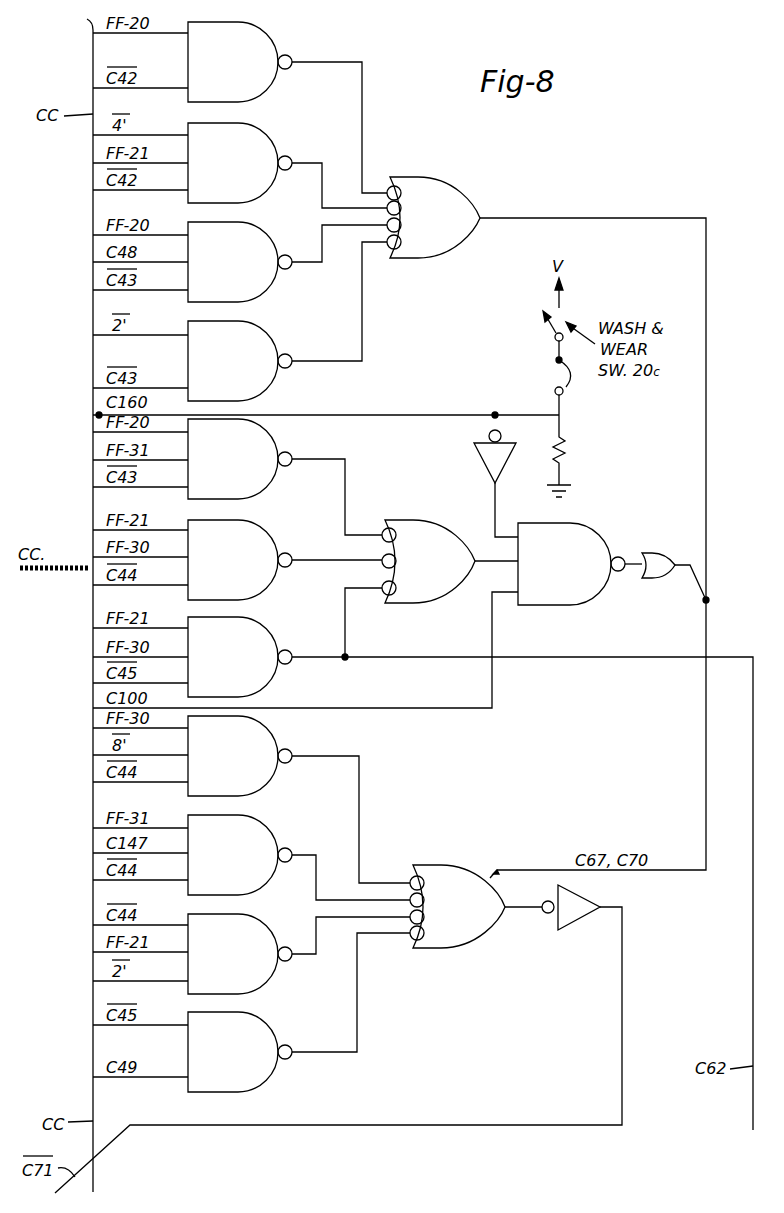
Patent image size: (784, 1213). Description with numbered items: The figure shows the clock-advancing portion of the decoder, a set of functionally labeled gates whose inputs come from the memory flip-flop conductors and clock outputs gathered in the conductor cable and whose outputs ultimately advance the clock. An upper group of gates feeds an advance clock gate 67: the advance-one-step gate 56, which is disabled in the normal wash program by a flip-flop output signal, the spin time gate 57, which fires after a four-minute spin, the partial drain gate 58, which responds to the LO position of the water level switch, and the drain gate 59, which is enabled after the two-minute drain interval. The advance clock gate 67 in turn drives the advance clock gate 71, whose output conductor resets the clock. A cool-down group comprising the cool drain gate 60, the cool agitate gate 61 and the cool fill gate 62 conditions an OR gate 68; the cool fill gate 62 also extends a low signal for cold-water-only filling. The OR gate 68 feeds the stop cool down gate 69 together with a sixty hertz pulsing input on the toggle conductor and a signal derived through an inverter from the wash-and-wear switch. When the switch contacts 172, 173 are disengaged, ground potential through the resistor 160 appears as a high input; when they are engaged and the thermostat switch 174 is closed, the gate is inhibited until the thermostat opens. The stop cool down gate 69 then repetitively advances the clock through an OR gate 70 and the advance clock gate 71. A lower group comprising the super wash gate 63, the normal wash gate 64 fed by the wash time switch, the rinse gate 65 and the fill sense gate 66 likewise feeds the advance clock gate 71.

The advance-one-step gate 56 is at (245, 62).
The spin time gate 57 is at (246, 163).
The partial drain gate 58 is at (245, 262).
The drain gate 59 is at (245, 361).
The cool drain gate 60 is at (245, 459).
The cool agitate gate 61 is at (245, 560).
The cool fill gate 62 is at (245, 657).
The super wash gate 63 is at (245, 756).
The normal wash gate 64 is at (245, 855).
The rinse gate 65 is at (245, 954).
The fill sense gate 66 is at (245, 1052).
The advance clock gate 67 is at (445, 217).
The OR gate 68 is at (432, 561).
The stop cool down gate 69 is at (575, 564).
The OR gate 70 is at (658, 557).
The advance clock gate 71 is at (469, 906).
The resistor 160 is at (566, 448).
The wash-and-wear switch contact 172 is at (562, 302).
The wash-and-wear switch contact 173 is at (550, 329).
The thermostat switch 174 is at (568, 388).